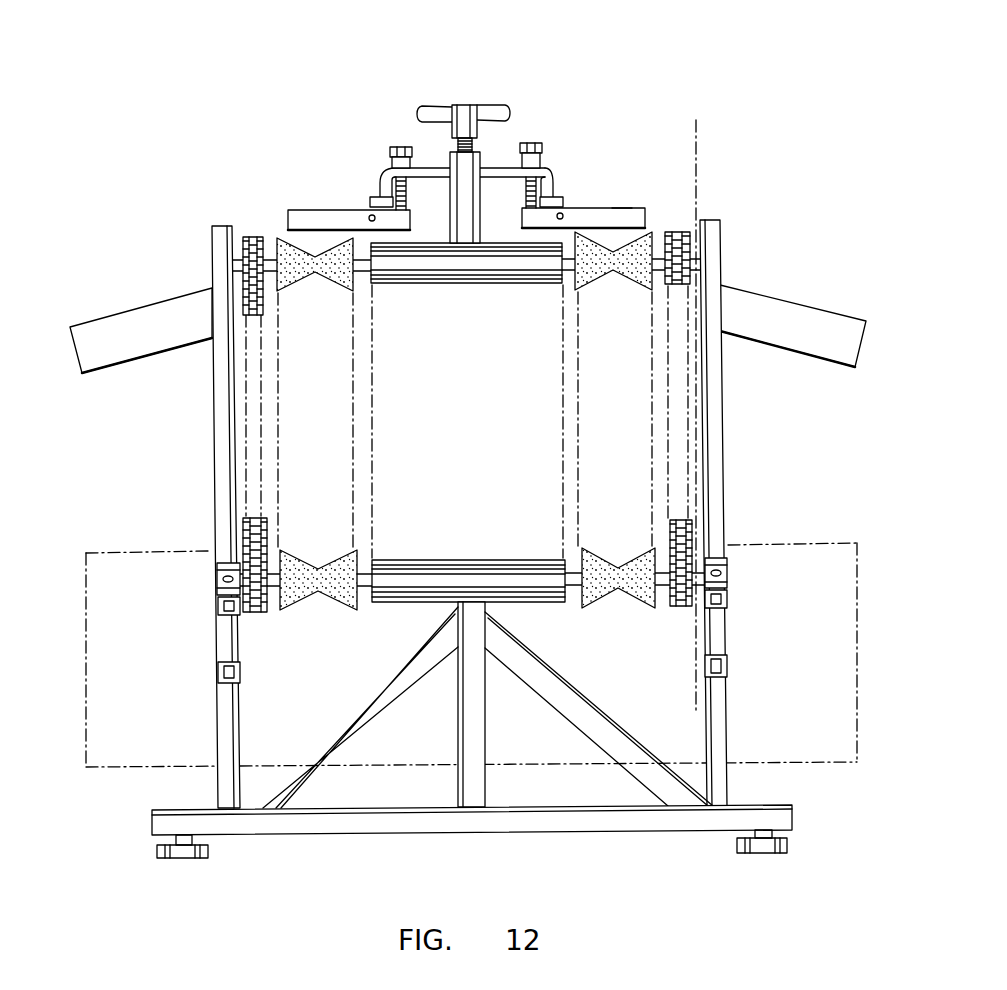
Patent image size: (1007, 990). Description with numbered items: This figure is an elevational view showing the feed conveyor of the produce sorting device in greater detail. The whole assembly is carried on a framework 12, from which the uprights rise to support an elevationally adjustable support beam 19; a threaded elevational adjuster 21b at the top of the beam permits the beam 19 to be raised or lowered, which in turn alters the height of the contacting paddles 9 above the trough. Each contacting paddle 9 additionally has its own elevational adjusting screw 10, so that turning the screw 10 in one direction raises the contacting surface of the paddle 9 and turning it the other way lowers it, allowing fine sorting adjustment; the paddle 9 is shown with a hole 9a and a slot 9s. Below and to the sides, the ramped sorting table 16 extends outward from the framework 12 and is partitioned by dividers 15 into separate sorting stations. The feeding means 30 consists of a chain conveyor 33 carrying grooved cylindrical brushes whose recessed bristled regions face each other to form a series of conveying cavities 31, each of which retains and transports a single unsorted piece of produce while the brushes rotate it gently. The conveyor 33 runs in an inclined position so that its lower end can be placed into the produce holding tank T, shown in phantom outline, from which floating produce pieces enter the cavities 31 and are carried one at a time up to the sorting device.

The contacting paddle 9 is at (300, 210).
The hole in guide bar 9a is at (369, 216).
The slot in guide bar 9s is at (622, 208).
The elevational adjustment screw 10 is at (400, 146).
The framework 12 is at (575, 818).
The divider 15 is at (710, 126).
The ramped sorting table 16 is at (97, 330).
The elevationally adjustable support beam 19 is at (503, 167).
The threaded elevational adjuster 21b is at (465, 103).
The feeding means 30 is at (667, 371).
The conveying cavity 31 is at (318, 553).
The chain conveyor 33 is at (247, 520).
The produce holding tank T is at (847, 533).